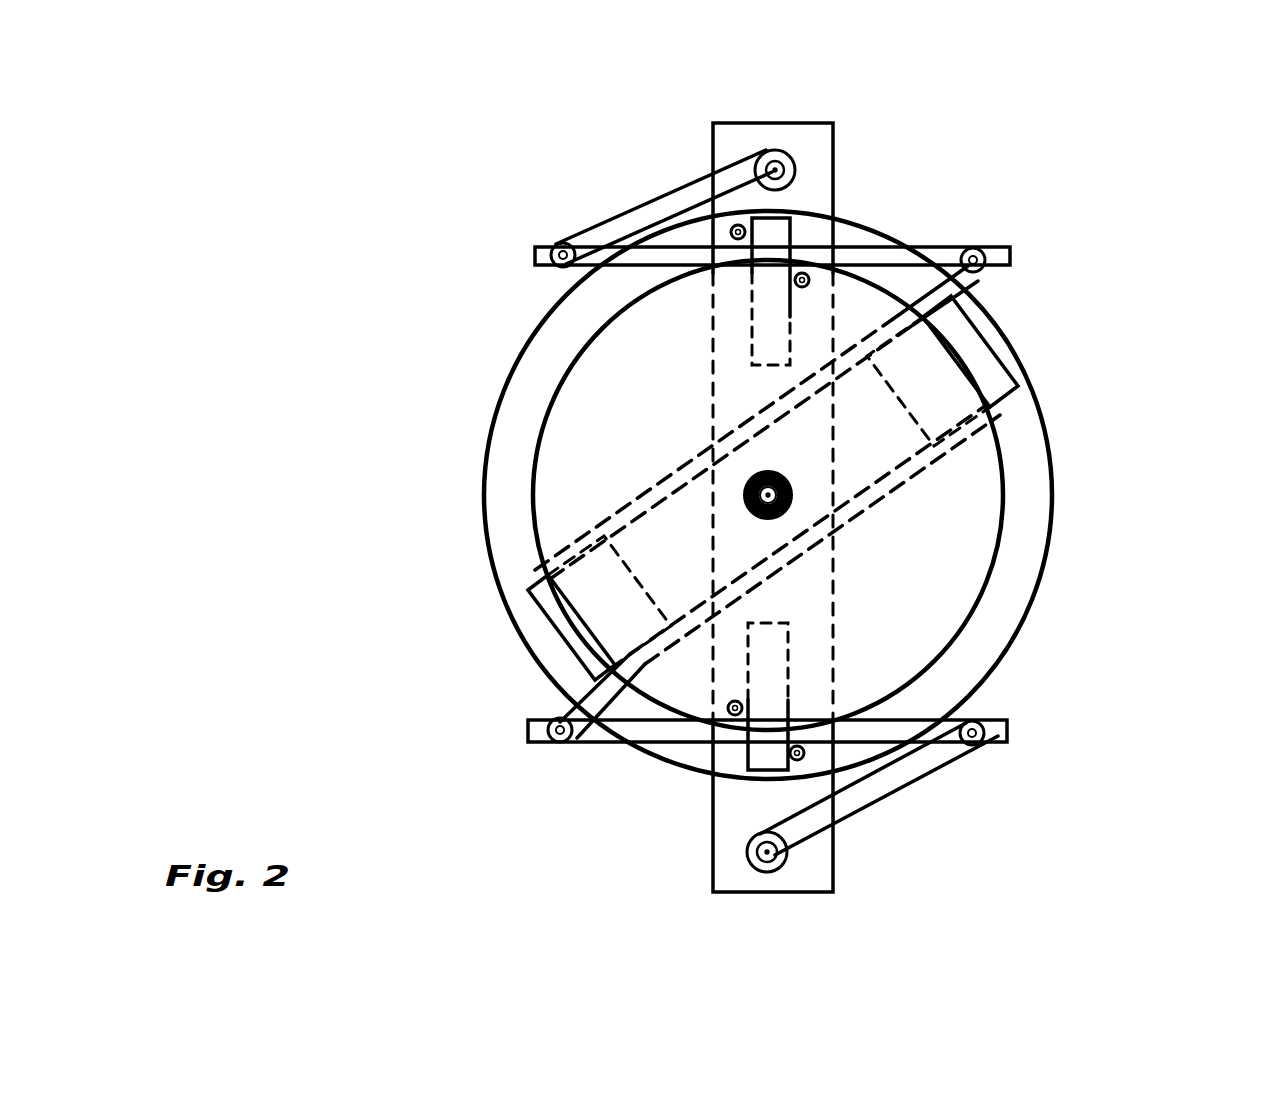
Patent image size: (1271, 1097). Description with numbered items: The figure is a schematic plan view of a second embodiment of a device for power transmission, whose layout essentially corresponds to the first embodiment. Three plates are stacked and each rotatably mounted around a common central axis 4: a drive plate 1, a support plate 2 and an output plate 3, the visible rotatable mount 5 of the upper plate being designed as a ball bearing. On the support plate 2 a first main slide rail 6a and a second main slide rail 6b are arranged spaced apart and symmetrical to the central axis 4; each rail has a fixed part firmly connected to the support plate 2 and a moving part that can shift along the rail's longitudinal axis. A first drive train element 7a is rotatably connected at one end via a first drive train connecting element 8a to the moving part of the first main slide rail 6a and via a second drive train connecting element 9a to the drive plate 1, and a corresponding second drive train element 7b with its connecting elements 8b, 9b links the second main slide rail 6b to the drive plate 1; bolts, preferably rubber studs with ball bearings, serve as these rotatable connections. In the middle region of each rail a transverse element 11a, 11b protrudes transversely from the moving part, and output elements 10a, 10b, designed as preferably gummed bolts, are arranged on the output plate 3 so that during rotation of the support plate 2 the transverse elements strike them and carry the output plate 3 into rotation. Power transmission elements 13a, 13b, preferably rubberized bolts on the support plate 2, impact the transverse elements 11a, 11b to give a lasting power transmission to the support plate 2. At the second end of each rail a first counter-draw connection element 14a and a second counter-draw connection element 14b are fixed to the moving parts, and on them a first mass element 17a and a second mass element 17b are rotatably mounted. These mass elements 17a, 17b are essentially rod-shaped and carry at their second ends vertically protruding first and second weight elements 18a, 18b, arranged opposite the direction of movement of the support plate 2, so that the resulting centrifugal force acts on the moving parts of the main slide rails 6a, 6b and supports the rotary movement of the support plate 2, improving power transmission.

The drive plate 1 is at (833, 168).
The support plate 2 is at (1055, 458).
The output plate 3 is at (1007, 540).
The central axis 4 is at (745, 495).
The rotatable mount 5 is at (747, 520).
The first main slide rail 6a is at (655, 260).
The second main slide rail 6b is at (685, 740).
The first drive train element 7a is at (663, 213).
The second drive train element 7b is at (840, 807).
The first drive train connecting element 8a is at (557, 243).
The second drive train connecting element of the second rail 8b is at (1005, 727).
The second drive train connecting element 9a is at (797, 163).
The drive train connecting element of the second drive train element 9b is at (747, 845).
The output element 10a is at (805, 262).
The second output element 10b is at (735, 722).
The transverse element 11a is at (785, 230).
The second transverse element 11b is at (788, 652).
The power transmission element 13a is at (710, 200).
The second power transmission element 13b is at (925, 752).
The first counter-draw connection element 14a is at (975, 250).
The second counter-draw connection element 14b is at (555, 724).
The first mass element 17a is at (747, 433).
The second mass element 17b is at (855, 508).
The first weight element 18a is at (552, 614).
The second weight element 18b is at (990, 347).